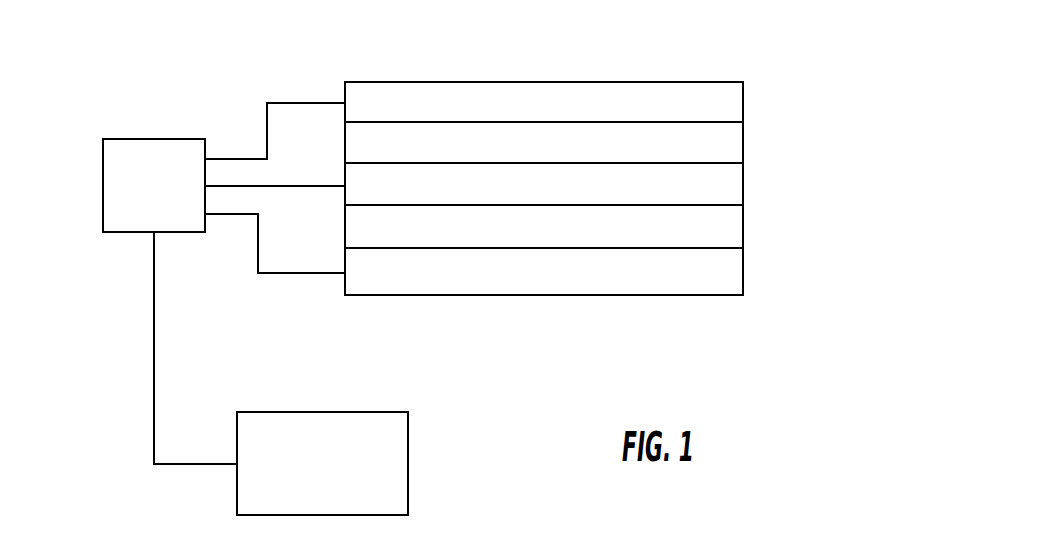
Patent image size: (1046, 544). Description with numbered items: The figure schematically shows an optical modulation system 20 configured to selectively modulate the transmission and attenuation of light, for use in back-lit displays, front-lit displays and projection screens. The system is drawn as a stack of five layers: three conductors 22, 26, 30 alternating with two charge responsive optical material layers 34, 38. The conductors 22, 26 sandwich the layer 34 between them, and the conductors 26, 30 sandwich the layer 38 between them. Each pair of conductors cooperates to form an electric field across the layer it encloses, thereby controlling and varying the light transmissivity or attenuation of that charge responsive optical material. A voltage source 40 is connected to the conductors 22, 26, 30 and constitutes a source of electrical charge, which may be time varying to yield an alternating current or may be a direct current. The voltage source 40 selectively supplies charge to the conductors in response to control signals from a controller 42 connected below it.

The optical modulation system 20 is at (788, 76).
The conductor 22 is at (743, 103).
The charge responsive optical material layer 34 is at (743, 141).
The conductor 26 is at (743, 183).
The charge responsive optical material layer 38 is at (743, 229).
The conductor 30 is at (743, 274).
The voltage source 40 is at (103, 193).
The controller 42 is at (408, 461).